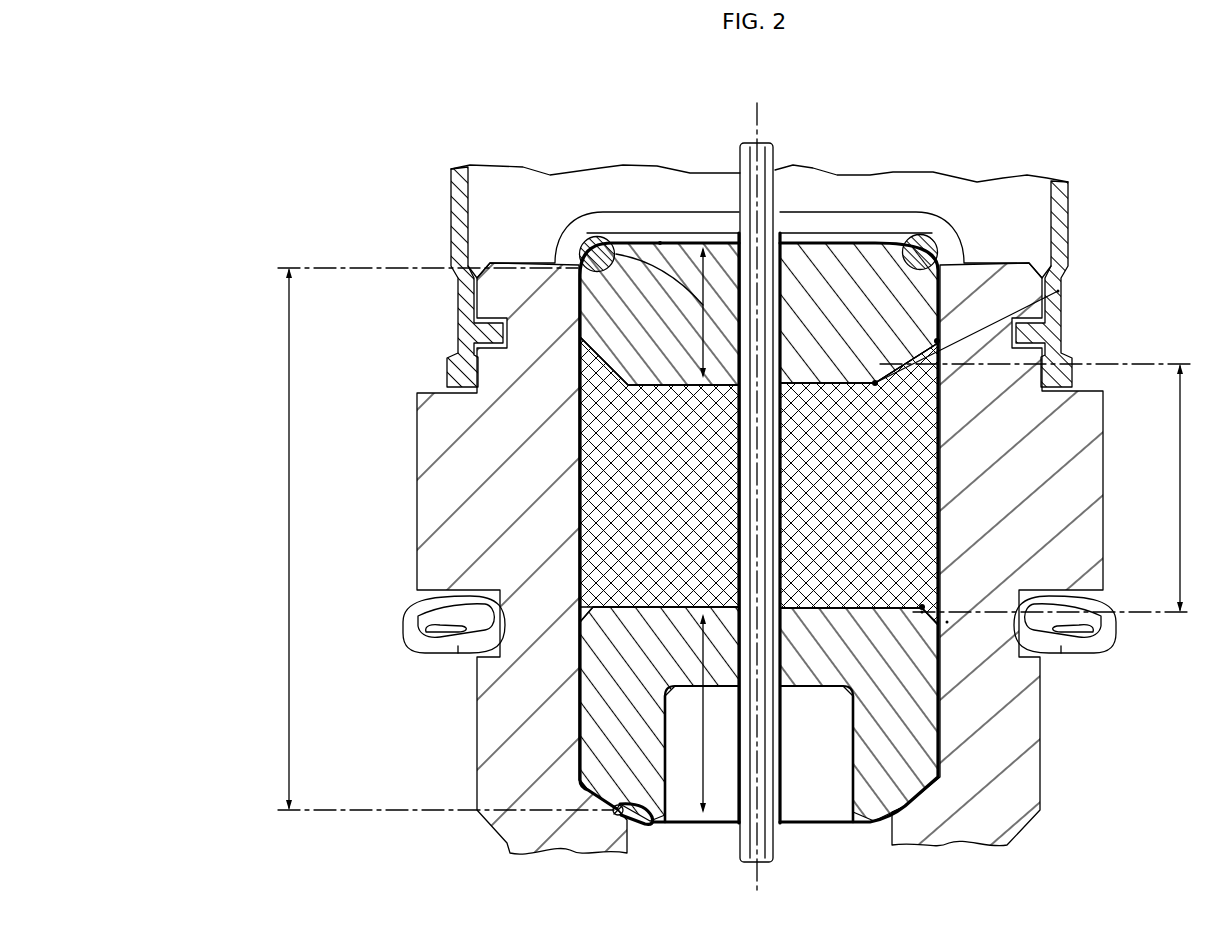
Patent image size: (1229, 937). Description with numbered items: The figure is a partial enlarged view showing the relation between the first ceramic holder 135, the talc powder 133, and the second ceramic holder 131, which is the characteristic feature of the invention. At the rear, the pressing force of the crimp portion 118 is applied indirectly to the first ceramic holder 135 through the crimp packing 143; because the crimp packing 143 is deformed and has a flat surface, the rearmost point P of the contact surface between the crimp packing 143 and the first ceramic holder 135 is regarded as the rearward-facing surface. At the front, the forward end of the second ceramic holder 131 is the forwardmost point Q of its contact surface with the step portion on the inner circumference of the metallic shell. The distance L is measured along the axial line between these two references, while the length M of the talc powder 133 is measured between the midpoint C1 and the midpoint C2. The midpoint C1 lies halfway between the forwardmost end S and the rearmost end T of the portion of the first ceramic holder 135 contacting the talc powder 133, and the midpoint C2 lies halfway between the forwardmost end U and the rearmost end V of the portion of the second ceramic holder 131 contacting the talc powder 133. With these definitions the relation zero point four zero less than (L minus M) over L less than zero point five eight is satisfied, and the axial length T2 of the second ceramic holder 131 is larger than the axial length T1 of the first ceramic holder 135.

The crimp portion 118 is at (587, 217).
The crimp packing 143 is at (612, 243).
The second ceramic holder 131 is at (613, 705).
The talc powder 133 is at (607, 497).
The first ceramic holder 135 is at (607, 310).
The rearmost point P is at (660, 243).
The length of the first ceramic holder T1 is at (703, 247).
The forwardmost end S is at (875, 383).
The midpoint C1 is at (937, 341).
The rearmost end T is at (1058, 291).
The distance L is at (438, 539).
The length of the talc powder M is at (1043, 488).
The rearmost end V is at (922, 607).
The forwardmost end U is at (947, 622).
The forwardmost point Q is at (650, 826).
The length of the second ceramic holder T2 is at (703, 715).
The midpoint C2 is at (922, 612).